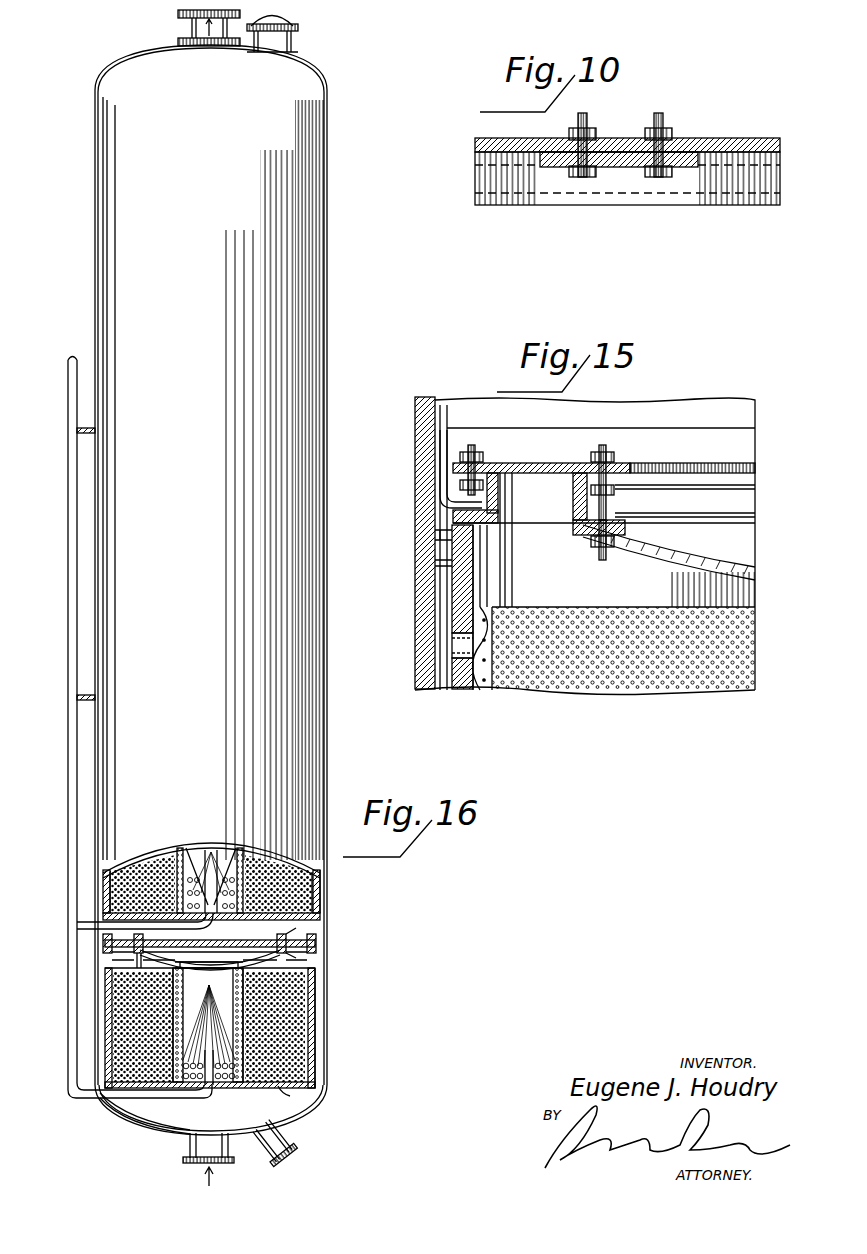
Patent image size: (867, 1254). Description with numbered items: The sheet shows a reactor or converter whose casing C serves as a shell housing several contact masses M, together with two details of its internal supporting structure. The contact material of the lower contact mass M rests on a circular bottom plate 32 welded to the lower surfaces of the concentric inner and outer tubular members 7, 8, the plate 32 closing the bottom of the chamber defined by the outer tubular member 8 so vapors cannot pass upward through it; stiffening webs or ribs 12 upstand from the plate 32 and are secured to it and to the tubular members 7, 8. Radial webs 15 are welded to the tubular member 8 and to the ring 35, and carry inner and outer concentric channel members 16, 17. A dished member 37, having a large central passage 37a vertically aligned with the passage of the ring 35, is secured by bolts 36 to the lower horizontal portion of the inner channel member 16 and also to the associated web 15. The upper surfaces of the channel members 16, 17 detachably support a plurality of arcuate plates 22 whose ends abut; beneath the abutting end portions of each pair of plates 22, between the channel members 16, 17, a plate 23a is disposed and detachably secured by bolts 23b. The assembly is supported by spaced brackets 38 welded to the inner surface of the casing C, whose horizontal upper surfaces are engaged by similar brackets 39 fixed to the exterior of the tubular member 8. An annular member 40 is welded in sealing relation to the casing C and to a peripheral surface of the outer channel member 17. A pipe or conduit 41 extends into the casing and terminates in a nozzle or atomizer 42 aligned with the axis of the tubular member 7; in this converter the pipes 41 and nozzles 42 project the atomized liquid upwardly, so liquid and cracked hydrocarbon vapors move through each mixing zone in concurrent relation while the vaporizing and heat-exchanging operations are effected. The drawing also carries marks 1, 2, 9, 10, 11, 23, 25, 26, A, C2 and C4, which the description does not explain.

In FIG. 16, the inlet nozzle 1 is at (190, 28).
In FIG. 16, the outlet nozzle 2 is at (189, 1148).
In FIG. 16, the inner tubular member 7 is at (198, 852).
In FIG. 16, the outer tubular member 8 is at (106, 886).
In FIG. 15, the outer tubular member 8 is at (460, 600).
In FIG. 16, the partition plate 9 is at (110, 901).
In FIG. 15, the partition plate 9 is at (456, 641).
In FIG. 16, the perforated tube 10 is at (170, 858).
In FIG. 16, the perforated partition 11 is at (122, 868).
In FIG. 15, the perforated partition 11 is at (490, 618).
In FIG. 16, the stiffening webs or ribs 12 is at (108, 1070).
In FIG. 16, the webs or ribs 15 is at (105, 963).
In FIG. 15, the webs or ribs 15 is at (498, 552).
In FIG. 16, the inner channel member 16 is at (318, 938).
In FIG. 10, the inner channel member 16 is at (532, 203).
In FIG. 15, the inner channel member 16 is at (574, 510).
In FIG. 16, the outer channel member 17 is at (103, 944).
In FIG. 15, the outer channel member 17 is at (498, 503).
In FIG. 16, the arcuate plates 22 is at (138, 940).
In FIG. 10, the arcuate plates 22 is at (563, 138).
In FIG. 15, the arcuate plates 22 is at (558, 462).
In FIG. 15, the bolt 23 is at (475, 452).
In FIG. 10, the plate 23a is at (624, 170).
In FIG. 10, the bolts 23b is at (588, 122).
In FIG. 16, the manhole 25 is at (292, 37).
In FIG. 16, the drain nozzle 26 is at (292, 1136).
In FIG. 16, the circular bottom plate 32 is at (295, 1013).
In FIG. 16, the ring 35 is at (244, 966).
In FIG. 16, the bolts 36 is at (142, 955).
In FIG. 15, the bolts 36 is at (598, 552).
In FIG. 16, the dished member 37 is at (262, 960).
In FIG. 15, the dished member 37 is at (664, 556).
In FIG. 16, the central passage 37a is at (209, 959).
In FIG. 15, the brackets 38 is at (448, 571).
In FIG. 15, the brackets 39 is at (448, 545).
In FIG. 15, the annular member 40 is at (440, 470).
In FIG. 16, the pipe or conduit 41 is at (82, 434).
In FIG. 16, the nozzle or atomizer 42 is at (68, 765).
In FIG. 15, the catalyst space A is at (555, 680).
In FIG. 16, the casing C is at (88, 216).
In FIG. 15, the casing C is at (409, 506).
In FIG. 16, the bottom head C2 is at (112, 1106).
In FIG. 16, the cylindrical wall C4 is at (320, 892).
In FIG. 15, the cylindrical wall C4 is at (445, 660).
In FIG. 15, the contact mass M is at (732, 651).